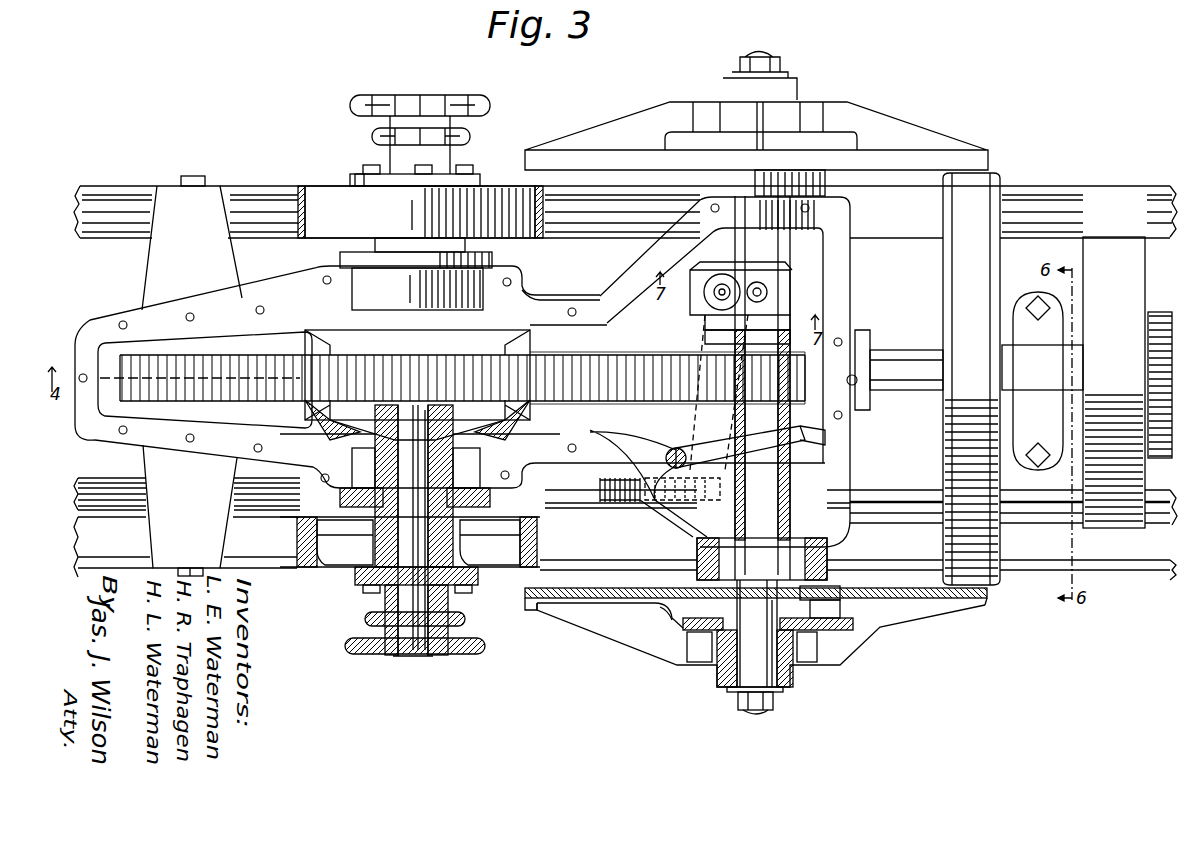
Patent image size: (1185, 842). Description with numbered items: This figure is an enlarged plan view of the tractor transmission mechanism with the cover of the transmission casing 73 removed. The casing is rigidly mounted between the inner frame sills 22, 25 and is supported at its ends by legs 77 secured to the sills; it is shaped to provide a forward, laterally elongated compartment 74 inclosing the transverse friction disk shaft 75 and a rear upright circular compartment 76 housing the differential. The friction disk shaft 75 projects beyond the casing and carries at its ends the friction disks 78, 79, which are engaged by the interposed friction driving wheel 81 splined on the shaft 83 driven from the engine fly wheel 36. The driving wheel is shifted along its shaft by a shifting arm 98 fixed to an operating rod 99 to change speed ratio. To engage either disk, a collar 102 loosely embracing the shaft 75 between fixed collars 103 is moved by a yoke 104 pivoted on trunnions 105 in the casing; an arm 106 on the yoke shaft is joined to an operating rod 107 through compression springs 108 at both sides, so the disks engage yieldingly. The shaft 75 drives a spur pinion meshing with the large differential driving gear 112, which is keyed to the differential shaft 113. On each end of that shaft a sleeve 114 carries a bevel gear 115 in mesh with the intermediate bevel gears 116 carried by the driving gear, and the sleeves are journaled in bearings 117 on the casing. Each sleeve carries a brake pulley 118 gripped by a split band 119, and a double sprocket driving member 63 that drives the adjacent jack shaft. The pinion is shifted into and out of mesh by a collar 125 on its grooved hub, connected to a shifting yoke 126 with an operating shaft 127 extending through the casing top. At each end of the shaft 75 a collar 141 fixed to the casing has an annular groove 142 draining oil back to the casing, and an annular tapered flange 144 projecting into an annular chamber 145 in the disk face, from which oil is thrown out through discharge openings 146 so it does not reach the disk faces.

The inner frame sill 22 is at (262, 186).
The lower frame beam 25 is at (462, 547).
The gear 36 is at (1127, 382).
The driving member 63 is at (488, 104).
The transmission casing 73 is at (553, 296).
The forward compartment 74 is at (820, 252).
The friction disk shaft 75 is at (835, 546).
The rear upright circular compartment 76 is at (700, 560).
The leg 77 is at (192, 381).
The friction disk 78 is at (988, 160).
The friction disk 79 is at (985, 604).
The friction driving wheel 81 is at (960, 205).
The shaft 83 is at (905, 360).
The shifting arm 98 is at (1042, 381).
The operating rod 99 is at (898, 492).
The collar 102 is at (792, 293).
The collar 103 is at (715, 335).
The yoke 104 is at (690, 300).
The pivot trunnion 105 is at (718, 290).
The arm 106 is at (700, 412).
The operating rod 107 is at (112, 472).
The compression spring 108 is at (620, 502).
The differential driving gear 112 is at (575, 346).
The differential shaft 113 is at (425, 660).
The sleeve 114 is at (360, 592).
The bevel gear 115 is at (525, 434).
The intermediate bevel gear 116 is at (305, 352).
The bearing 117 is at (488, 455).
The brake pulley 118 is at (305, 567).
The split band 119 is at (525, 555).
The collar 125 is at (812, 445).
The shifting yoke 126 is at (690, 445).
The operating shaft 127 is at (666, 456).
The collar 141 is at (680, 632).
The annular groove 142 is at (840, 590).
The annular tapered flange 144 is at (840, 610).
The annular chamber 145 is at (815, 632).
The oil discharge opening 146 is at (660, 622).